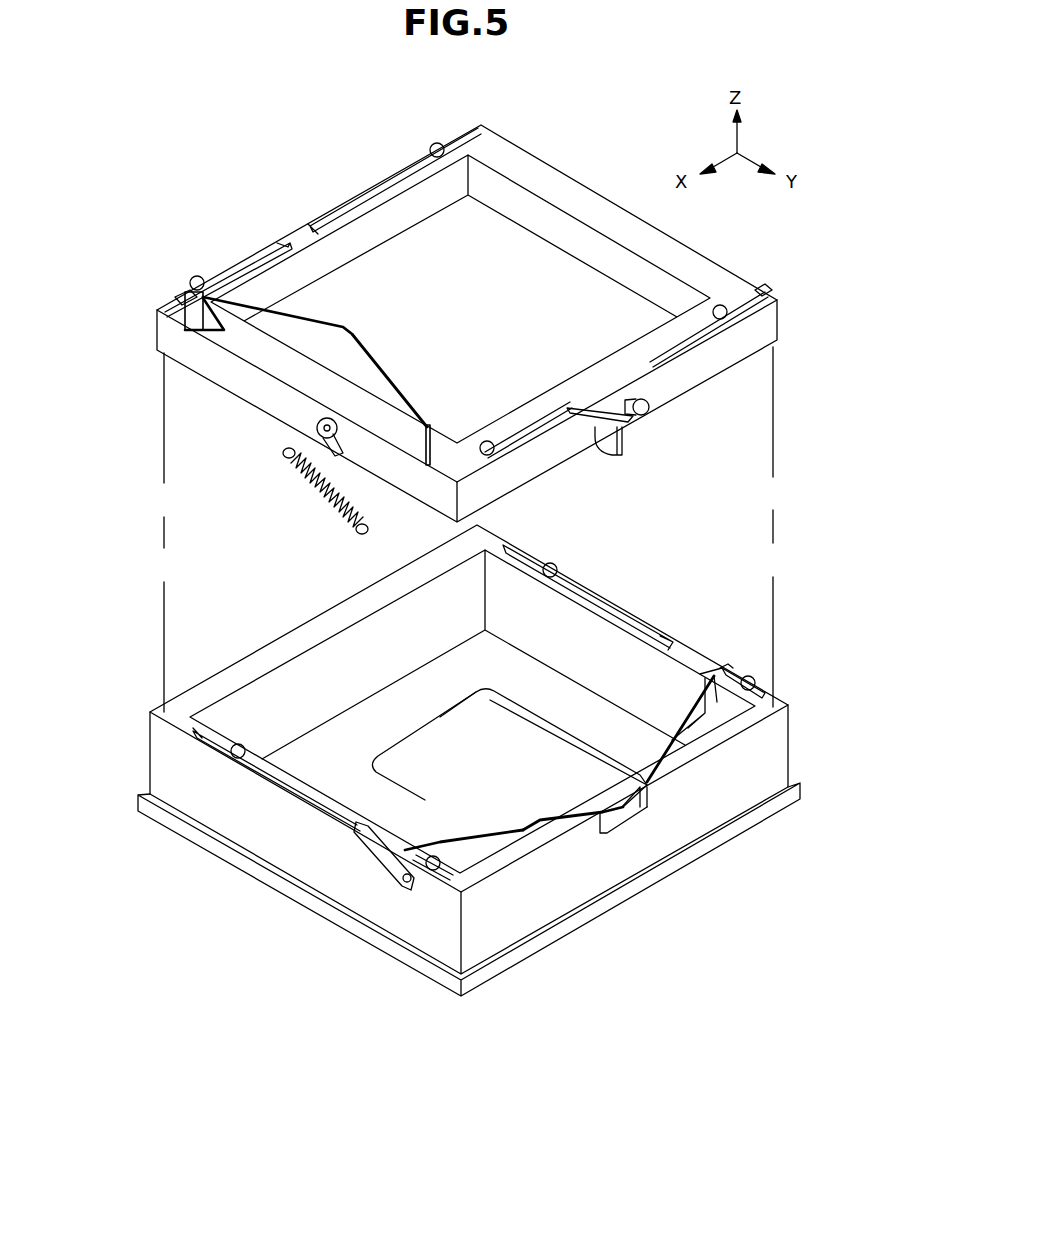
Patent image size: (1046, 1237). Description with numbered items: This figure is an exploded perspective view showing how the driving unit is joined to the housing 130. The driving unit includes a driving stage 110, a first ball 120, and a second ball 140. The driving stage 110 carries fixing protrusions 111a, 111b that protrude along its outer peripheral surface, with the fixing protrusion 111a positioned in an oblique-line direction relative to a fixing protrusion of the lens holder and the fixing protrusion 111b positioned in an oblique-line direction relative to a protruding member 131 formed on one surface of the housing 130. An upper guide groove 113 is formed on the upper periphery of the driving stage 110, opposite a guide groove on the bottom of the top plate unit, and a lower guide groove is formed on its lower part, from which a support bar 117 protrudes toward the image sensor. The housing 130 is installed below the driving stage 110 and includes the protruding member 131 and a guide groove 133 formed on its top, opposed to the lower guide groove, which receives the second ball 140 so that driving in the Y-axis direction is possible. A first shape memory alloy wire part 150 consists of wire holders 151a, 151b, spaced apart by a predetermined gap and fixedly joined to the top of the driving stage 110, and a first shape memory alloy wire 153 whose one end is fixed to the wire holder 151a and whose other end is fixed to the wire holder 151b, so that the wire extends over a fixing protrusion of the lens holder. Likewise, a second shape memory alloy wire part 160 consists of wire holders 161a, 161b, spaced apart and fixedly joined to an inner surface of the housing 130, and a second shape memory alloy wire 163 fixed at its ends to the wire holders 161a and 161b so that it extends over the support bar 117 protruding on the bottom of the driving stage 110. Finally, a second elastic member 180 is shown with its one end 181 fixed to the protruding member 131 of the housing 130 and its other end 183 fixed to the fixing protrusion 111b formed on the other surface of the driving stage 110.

The driving stage 110 is at (783, 322).
The fixing protrusion 111a is at (648, 410).
The fixing protrusion 111b is at (300, 429).
The upper guide groove 113 is at (178, 300).
The support bar 117 is at (625, 440).
The first ball 120 is at (437, 143).
The housing 130 is at (780, 725).
The protruding member 131 is at (397, 880).
The guide groove 133 is at (655, 633).
The second ball 140 is at (558, 572).
The first shape memory alloy wire part 150 is at (220, 378).
The wire holder 151a is at (193, 325).
The wire holder 151b is at (398, 421).
The first shape memory alloy wire 153 is at (312, 326).
The second shape memory alloy wire part 160 is at (575, 866).
The wire holder 161a is at (427, 847).
The wire holder 161b is at (705, 703).
The second shape memory alloy wire 163 is at (640, 808).
The second elastic member 180 is at (206, 504).
The one end 181 is at (290, 452).
The other end 183 is at (355, 528).